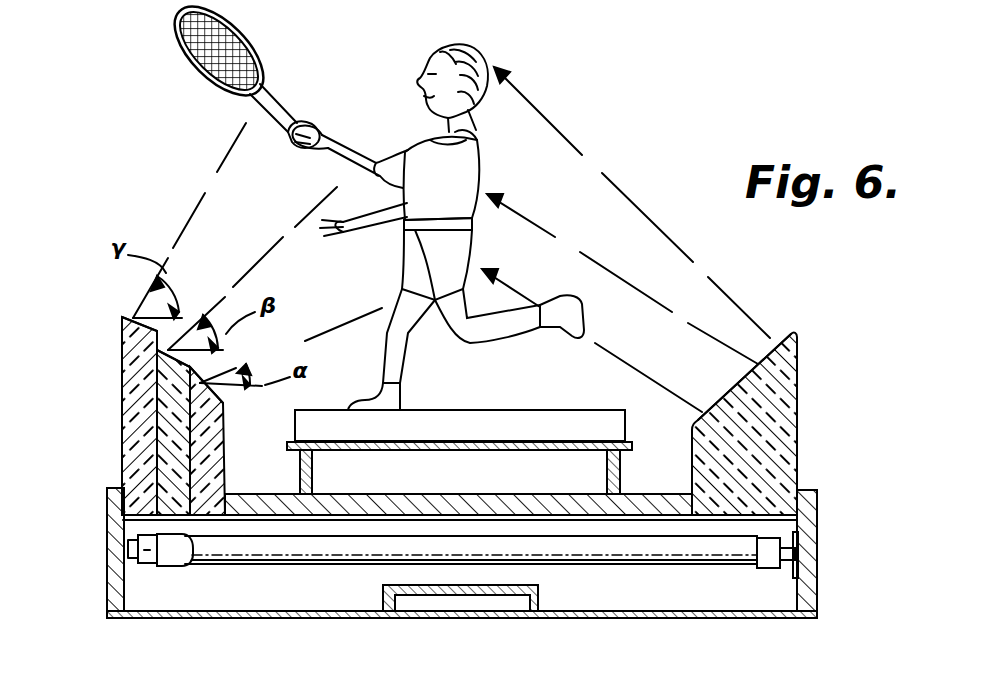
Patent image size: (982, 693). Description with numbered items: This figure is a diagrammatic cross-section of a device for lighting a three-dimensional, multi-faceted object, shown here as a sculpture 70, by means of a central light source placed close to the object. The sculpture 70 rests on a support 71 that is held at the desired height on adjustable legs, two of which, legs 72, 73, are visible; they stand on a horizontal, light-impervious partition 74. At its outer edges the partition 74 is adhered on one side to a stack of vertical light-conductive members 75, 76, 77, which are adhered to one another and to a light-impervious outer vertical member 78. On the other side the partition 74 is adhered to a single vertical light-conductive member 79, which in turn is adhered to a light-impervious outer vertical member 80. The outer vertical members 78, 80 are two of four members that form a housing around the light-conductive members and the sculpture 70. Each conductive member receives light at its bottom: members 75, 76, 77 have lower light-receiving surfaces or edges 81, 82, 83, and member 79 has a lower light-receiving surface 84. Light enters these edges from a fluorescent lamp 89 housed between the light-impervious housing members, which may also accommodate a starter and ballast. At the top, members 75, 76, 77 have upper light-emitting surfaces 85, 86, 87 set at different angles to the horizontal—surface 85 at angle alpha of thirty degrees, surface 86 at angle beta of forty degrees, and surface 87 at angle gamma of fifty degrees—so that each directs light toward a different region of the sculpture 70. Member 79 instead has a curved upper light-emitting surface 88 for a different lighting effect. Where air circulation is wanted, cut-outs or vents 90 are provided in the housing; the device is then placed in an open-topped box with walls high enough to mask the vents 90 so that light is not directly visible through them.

The sculpture 70 is at (474, 177).
The support 71 is at (513, 453).
The leg 72 is at (315, 483).
The leg 73 is at (620, 483).
The partition 74 is at (425, 495).
The light-conductive member 75 is at (228, 466).
The light-conductive member 76 is at (165, 440).
The light-conductive member 77 is at (130, 385).
The outer vertical member 78 is at (112, 575).
The light-conductive member 79 is at (775, 432).
The outer vertical member 80 is at (818, 568).
The lower light-receiving surface 81 is at (218, 521).
The lower light-receiving surface 82 is at (195, 546).
The lower light-receiving surface 83 is at (150, 519).
The lower light-receiving surface 84 is at (743, 524).
The upper light-emitting surface 85 is at (220, 400).
The upper light-emitting surface 86 is at (190, 354).
The upper light-emitting surface 87 is at (131, 316).
The curved upper light-emitting surface 88 is at (768, 345).
The fluorescent lamp 89 is at (330, 566).
The cut-outs or vents 90 is at (483, 592).